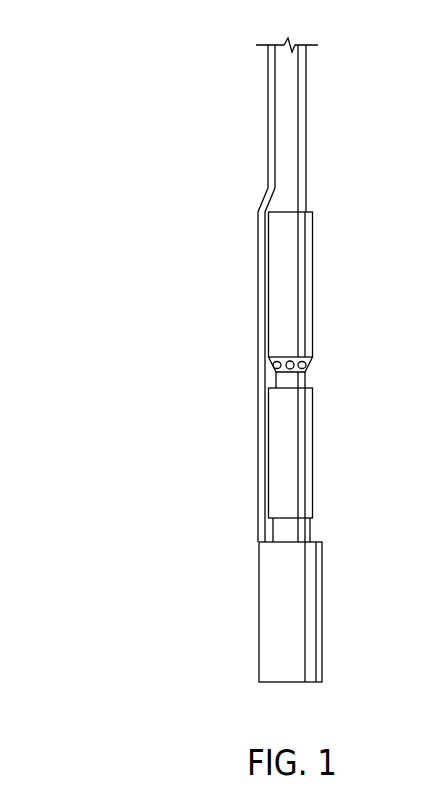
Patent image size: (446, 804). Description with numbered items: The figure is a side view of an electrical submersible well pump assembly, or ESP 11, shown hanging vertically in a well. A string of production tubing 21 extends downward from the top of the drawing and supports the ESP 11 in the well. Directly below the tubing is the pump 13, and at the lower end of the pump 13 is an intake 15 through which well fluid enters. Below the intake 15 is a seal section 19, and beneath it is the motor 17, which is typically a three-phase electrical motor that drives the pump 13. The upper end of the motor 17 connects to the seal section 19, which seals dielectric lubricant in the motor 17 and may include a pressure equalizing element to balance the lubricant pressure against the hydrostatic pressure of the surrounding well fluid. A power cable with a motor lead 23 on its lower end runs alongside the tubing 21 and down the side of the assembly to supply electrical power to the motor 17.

The submersible well pump assembly 11 is at (298, 360).
The pump 13 is at (280, 272).
The intake 15 is at (306, 367).
The motor 17 is at (282, 585).
The seal section 19 is at (282, 433).
The production tubing 21 is at (283, 120).
The motor lead 23 is at (263, 206).